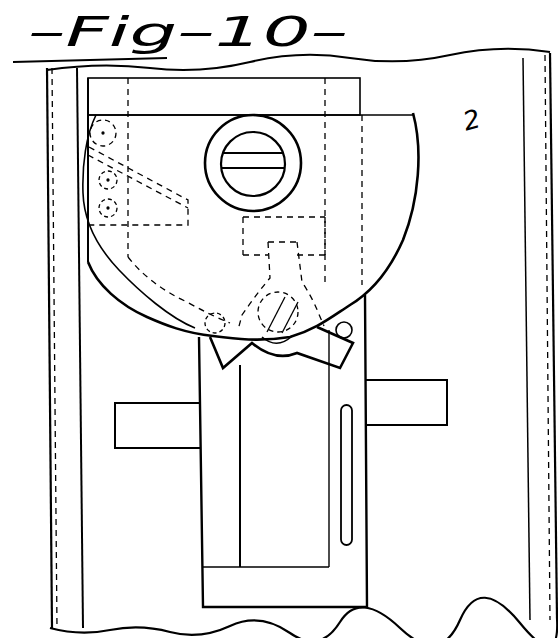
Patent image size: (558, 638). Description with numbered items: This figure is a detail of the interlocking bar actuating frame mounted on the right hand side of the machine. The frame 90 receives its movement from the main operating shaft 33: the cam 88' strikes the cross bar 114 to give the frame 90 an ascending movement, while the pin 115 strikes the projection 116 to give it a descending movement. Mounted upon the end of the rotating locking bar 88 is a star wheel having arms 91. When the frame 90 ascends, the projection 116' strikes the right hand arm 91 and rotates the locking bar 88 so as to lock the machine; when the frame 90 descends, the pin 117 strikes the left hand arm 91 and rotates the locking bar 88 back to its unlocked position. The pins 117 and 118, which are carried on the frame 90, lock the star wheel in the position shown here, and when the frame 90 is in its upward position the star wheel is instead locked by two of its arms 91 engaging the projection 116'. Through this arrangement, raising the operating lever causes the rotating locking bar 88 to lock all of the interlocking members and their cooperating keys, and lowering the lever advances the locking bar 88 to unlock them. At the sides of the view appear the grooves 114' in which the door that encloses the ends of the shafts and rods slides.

The cross bar 114 is at (225, 181).
The grooves 114' is at (302, 340).
The cam 88' is at (251, 209).
The rotating locking bar 88 is at (264, 280).
The main operating shaft 33 is at (247, 142).
The pin 115 is at (97, 131).
The projection 116 is at (148, 204).
The projection 116' is at (315, 475).
The pin 117 is at (199, 346).
The pin 118 is at (349, 328).
The frame 90 is at (213, 502).
The arms 91 is at (323, 350).